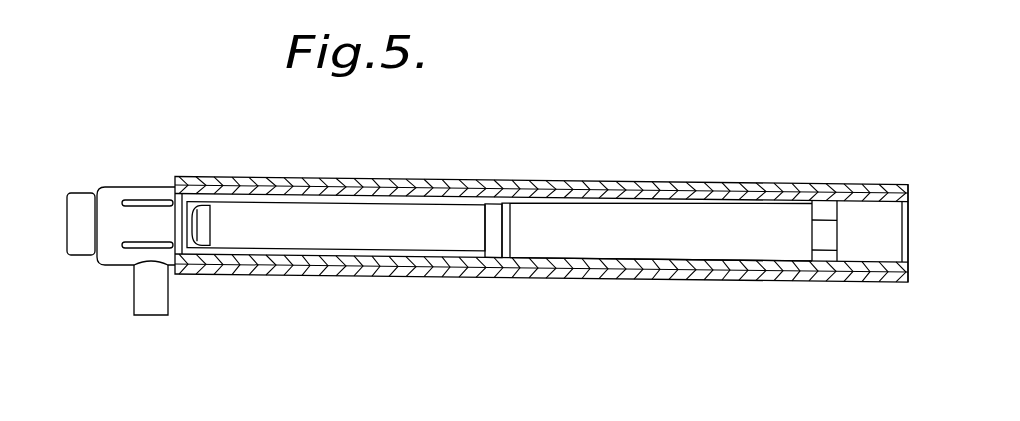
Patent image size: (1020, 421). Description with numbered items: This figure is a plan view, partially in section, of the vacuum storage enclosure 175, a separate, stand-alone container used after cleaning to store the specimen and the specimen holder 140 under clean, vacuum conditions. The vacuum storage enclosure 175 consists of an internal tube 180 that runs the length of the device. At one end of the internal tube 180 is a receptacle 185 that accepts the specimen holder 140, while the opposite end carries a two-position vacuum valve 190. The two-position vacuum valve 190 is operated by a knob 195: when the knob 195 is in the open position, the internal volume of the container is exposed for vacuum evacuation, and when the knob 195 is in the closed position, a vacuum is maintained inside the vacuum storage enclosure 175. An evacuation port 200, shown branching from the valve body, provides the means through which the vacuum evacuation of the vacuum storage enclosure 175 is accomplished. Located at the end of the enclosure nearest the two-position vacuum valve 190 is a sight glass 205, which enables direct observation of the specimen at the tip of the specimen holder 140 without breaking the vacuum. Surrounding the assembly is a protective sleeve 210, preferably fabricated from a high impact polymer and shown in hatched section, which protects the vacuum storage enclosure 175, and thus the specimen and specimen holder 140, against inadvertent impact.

The specimen holder 140 is at (494, 215).
The vacuum storage enclosure 175 is at (272, 178).
The internal tube 180 is at (753, 267).
The receptacle 185 is at (900, 250).
The two-position vacuum valve 190 is at (138, 187).
The knob 195 is at (78, 192).
The evacuation port 200 is at (150, 305).
The sight glass 205 is at (488, 238).
The protective sleeve 210 is at (735, 182).